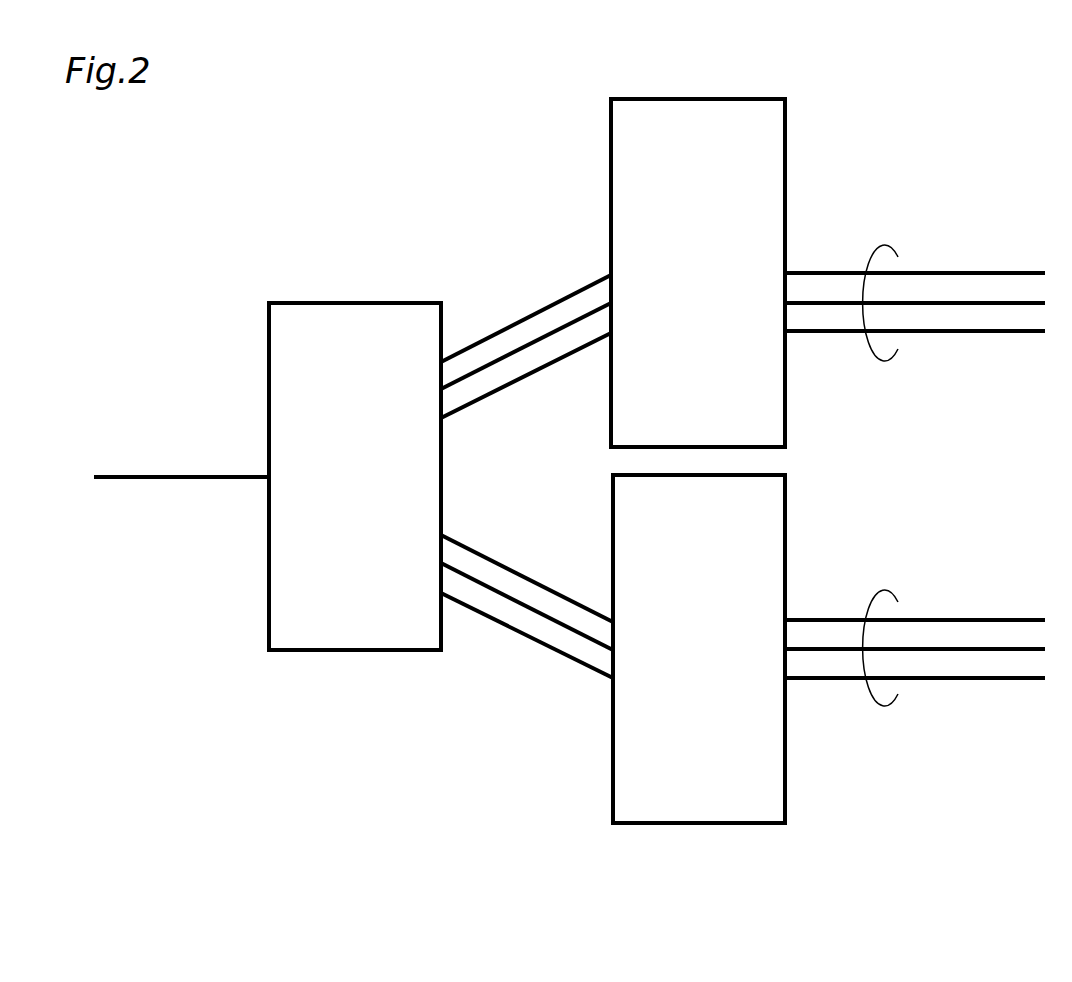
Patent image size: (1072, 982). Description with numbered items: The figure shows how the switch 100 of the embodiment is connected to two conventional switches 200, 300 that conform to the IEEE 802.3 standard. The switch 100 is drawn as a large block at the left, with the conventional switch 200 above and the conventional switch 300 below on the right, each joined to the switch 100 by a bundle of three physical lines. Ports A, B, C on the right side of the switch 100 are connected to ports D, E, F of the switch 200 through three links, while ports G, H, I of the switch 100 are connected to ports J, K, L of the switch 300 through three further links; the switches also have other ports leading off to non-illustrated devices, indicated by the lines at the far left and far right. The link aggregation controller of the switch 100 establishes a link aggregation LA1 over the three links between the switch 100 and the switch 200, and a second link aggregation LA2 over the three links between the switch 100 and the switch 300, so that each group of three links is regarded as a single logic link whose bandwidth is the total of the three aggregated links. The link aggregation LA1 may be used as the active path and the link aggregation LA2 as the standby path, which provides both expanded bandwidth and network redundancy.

The switch 100 is at (360, 303).
The switch 200 is at (698, 99).
The switch 300 is at (715, 825).
The link aggregation LA1 is at (510, 343).
The link aggregation LA2 is at (513, 597).
The port A is at (510, 324).
The port B is at (510, 352).
The port C is at (510, 381).
The port D is at (834, 273).
The port E is at (835, 303).
The port F is at (835, 331).
The port G is at (513, 571).
The port H is at (513, 600).
The port I is at (520, 652).
The port J is at (836, 620).
The port K is at (835, 649).
The port L is at (836, 678).